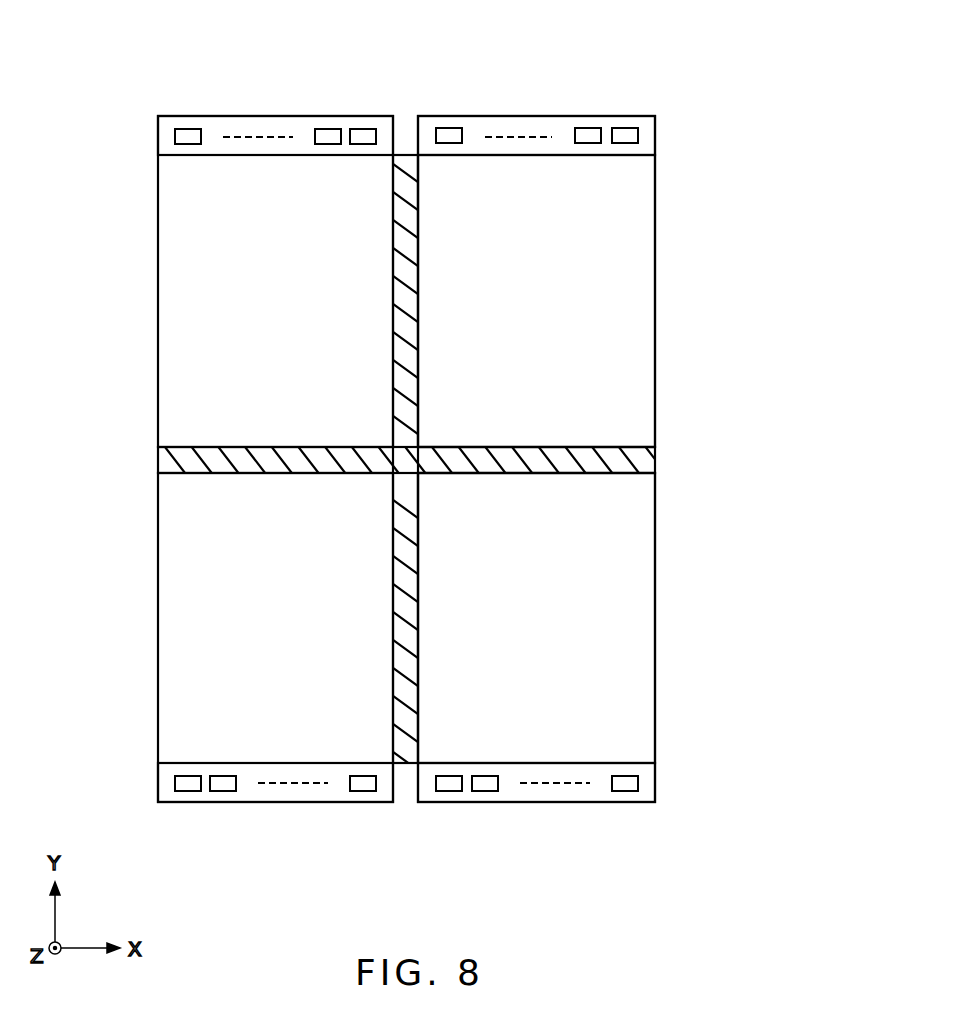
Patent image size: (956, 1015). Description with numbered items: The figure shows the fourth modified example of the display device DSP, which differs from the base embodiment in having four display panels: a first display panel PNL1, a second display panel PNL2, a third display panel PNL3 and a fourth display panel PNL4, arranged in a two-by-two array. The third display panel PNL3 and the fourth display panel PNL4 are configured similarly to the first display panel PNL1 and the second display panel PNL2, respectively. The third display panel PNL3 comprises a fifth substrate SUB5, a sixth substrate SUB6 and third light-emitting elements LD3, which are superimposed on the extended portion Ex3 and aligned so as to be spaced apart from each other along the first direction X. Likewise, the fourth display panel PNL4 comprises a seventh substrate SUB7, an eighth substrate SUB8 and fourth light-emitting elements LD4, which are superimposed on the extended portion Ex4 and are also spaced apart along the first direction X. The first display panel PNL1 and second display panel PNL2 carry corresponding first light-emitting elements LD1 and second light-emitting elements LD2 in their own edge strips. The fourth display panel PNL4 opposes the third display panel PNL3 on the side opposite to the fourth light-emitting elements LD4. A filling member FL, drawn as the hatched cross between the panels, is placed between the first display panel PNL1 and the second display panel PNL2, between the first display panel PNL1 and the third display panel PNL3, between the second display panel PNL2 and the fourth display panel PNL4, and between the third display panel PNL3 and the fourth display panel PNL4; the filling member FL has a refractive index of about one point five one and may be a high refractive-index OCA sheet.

The display device DSP is at (710, 92).
The first display panel PNL1 is at (176, 624).
The second display panel PNL2 is at (176, 300).
The third display panel PNL3 is at (646, 627).
The fourth display panel PNL4 is at (646, 303).
The fifth substrate SUB5 is at (646, 783).
The sixth substrate SUB6 is at (646, 717).
The seventh substrate SUB7 is at (646, 137).
The eighth substrate SUB8 is at (646, 217).
The first light-emitting elements LD1 is at (362, 791).
The second light-emitting elements LD2 is at (360, 128).
The third light-emitting elements LD3 is at (625, 791).
The fourth light-emitting elements LD4 is at (620, 128).
The extended portion Ex3 is at (515, 788).
The extended portion Ex4 is at (517, 130).
The filling member FL is at (405, 168).